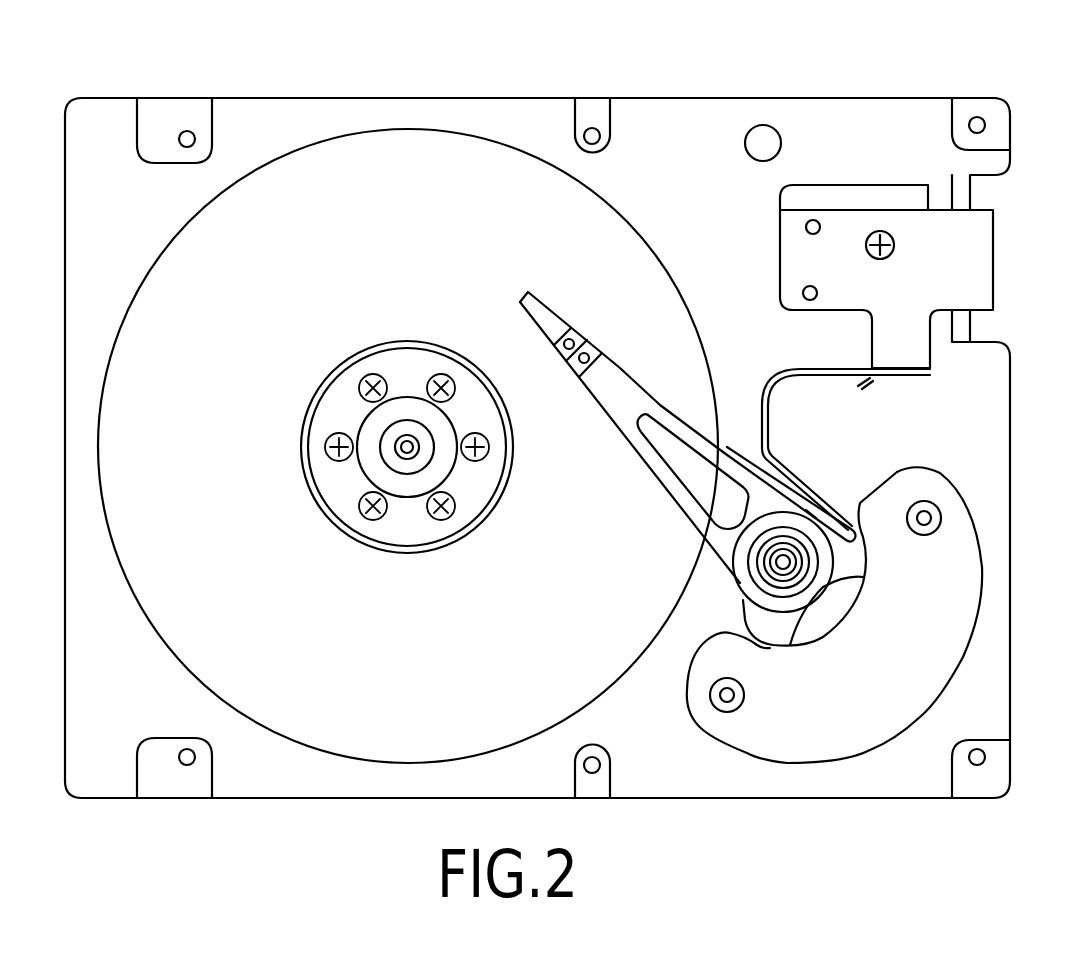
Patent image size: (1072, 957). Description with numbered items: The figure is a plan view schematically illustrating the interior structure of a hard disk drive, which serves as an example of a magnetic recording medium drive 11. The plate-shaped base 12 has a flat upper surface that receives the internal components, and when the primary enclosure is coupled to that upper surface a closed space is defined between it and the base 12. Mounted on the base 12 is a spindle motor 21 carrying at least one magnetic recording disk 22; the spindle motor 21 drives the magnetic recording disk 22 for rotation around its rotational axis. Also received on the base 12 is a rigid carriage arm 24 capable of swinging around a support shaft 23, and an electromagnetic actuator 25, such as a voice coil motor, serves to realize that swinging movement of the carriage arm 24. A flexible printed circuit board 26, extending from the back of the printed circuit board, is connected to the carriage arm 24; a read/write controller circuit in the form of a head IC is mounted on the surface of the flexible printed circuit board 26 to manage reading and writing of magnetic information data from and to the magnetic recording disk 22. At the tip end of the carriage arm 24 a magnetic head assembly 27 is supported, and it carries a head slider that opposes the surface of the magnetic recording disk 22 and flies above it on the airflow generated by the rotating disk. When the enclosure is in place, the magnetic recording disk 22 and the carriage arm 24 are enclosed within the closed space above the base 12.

The magnetic recording medium drive 11 is at (461, 71).
The base 12 is at (637, 98).
The spindle motor 21 is at (378, 462).
The magnetic recording disk 22 is at (610, 204).
The support shaft 23 is at (783, 562).
The carriage arm 24 is at (632, 447).
The electromagnetic actuator 25 is at (697, 620).
The flexible printed circuit board 26 is at (826, 378).
The magnetic head assembly 27 is at (512, 327).